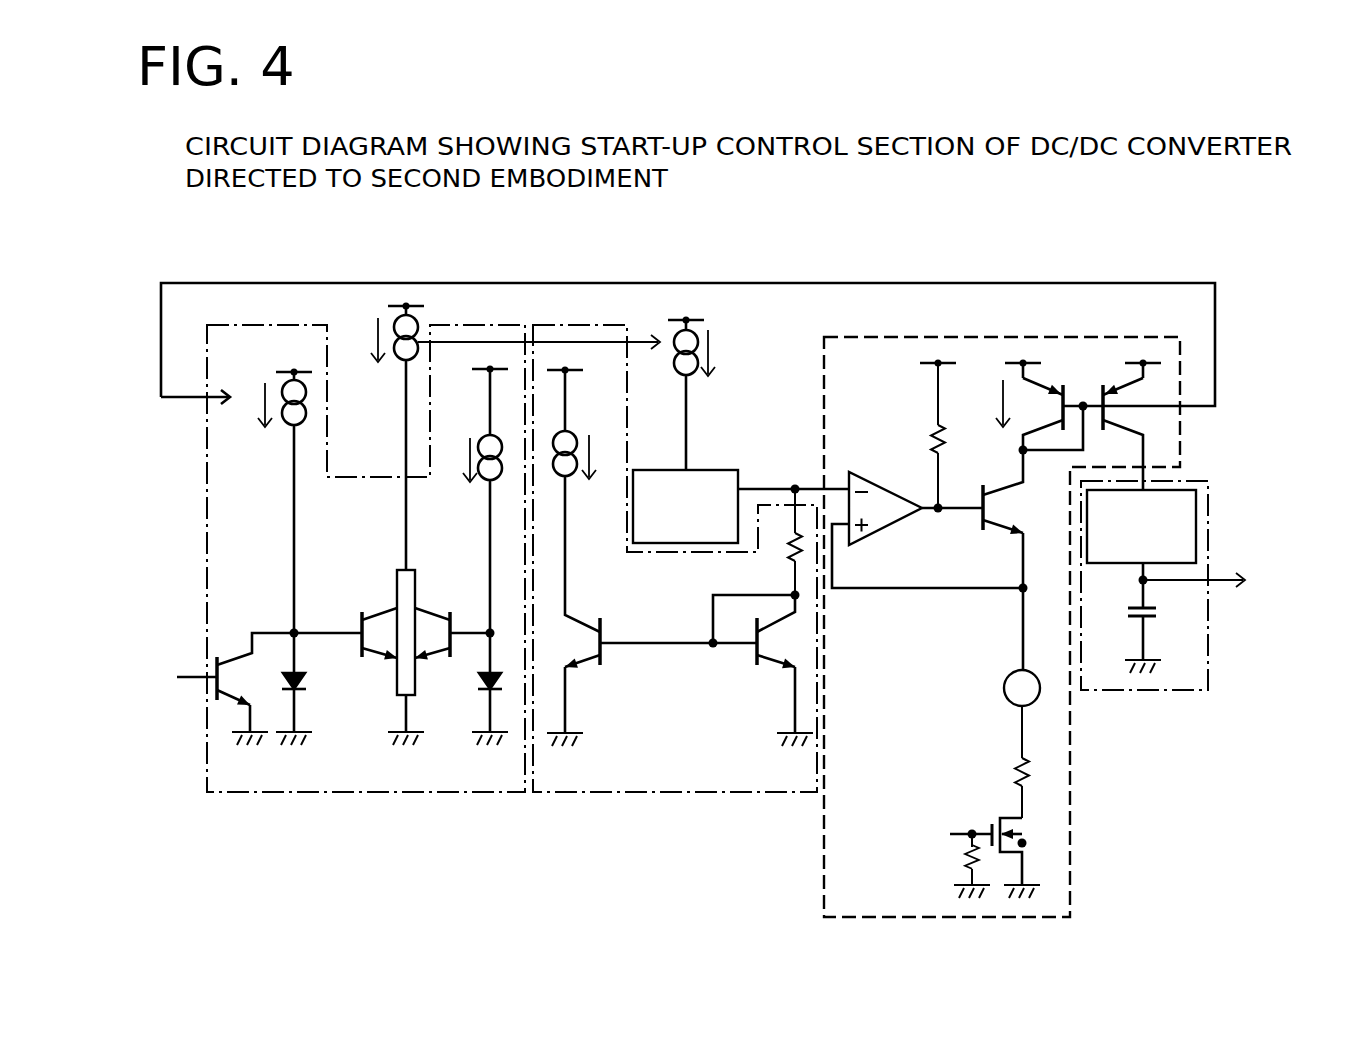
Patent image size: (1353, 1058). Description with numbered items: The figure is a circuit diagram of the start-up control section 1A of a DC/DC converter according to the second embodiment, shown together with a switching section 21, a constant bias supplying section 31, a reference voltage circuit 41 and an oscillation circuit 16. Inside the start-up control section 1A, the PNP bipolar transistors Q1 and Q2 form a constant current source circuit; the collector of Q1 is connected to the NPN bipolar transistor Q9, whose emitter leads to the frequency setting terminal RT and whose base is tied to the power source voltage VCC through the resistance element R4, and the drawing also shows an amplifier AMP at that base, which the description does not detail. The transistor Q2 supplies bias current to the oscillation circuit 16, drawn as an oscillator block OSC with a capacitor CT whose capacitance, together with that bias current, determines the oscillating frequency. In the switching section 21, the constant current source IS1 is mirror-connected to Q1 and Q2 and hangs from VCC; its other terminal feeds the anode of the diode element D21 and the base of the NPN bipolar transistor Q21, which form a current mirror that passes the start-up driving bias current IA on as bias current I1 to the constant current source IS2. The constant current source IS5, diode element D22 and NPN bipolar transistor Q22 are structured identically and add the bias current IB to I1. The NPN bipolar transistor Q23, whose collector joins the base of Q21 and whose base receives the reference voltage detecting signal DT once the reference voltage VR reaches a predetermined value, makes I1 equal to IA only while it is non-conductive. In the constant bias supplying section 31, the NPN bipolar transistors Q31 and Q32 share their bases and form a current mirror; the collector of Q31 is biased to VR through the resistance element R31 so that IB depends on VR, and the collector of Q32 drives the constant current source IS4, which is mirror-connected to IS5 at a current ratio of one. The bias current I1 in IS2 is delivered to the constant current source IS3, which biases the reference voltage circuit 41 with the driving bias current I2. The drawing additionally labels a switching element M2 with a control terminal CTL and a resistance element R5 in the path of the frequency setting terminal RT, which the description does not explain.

The start-up control section 1A is at (983, 337).
The switching section 21 is at (407, 793).
The constant bias supplying section 31 is at (687, 793).
The reference voltage circuit 41 is at (703, 472).
The oscillation circuit 16 is at (1098, 693).
The power source voltage VCC is at (297, 358).
The constant current source IS1 is at (283, 422).
The constant current source IS2 is at (397, 358).
The constant current source IS3 is at (677, 338).
The constant current source IS4 is at (568, 434).
The constant current source IS5 is at (486, 440).
The start-up driving bias current IA is at (623, 401).
The bias current IB is at (531, 458).
The bias current I1 is at (367, 337).
The driving bias current I2 is at (718, 353).
The NPN bipolar transistor Q23 is at (230, 658).
The NPN bipolar transistor Q21 is at (380, 617).
The NPN bipolar transistor Q22 is at (422, 613).
The diode element D21 is at (308, 678).
The diode element D22 is at (480, 677).
The reference voltage detecting signal DT is at (179, 676).
The reference voltage VR is at (793, 475).
The resistance element R31 is at (792, 542).
The NPN bipolar transistor Q31 is at (770, 660).
The NPN bipolar transistor Q32 is at (588, 657).
The amplifier AMP is at (927, 523).
The resistance element R4 is at (924, 434).
The PNP bipolar transistor Q1 is at (1054, 407).
The PNP bipolar transistor Q2 is at (1140, 425).
The NPN bipolar transistor Q9 is at (1012, 560).
The oscillator OSC is at (1166, 549).
The capacitor CT is at (1159, 635).
The frequency setting terminal RT is at (1011, 744).
The MOS transistor M2 is at (1028, 858).
The control signal terminal CTL is at (948, 833).
The resistor R5 is at (958, 866).